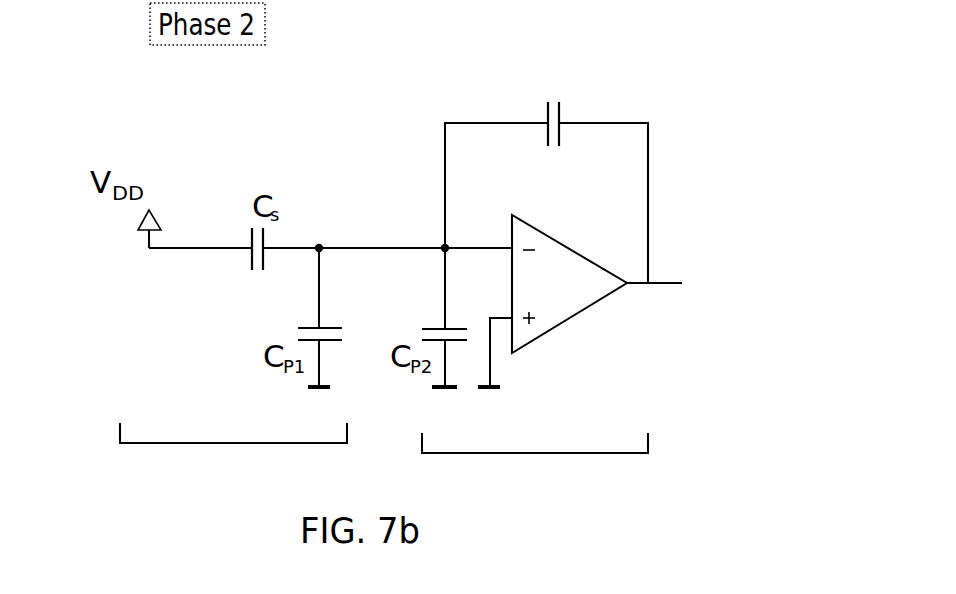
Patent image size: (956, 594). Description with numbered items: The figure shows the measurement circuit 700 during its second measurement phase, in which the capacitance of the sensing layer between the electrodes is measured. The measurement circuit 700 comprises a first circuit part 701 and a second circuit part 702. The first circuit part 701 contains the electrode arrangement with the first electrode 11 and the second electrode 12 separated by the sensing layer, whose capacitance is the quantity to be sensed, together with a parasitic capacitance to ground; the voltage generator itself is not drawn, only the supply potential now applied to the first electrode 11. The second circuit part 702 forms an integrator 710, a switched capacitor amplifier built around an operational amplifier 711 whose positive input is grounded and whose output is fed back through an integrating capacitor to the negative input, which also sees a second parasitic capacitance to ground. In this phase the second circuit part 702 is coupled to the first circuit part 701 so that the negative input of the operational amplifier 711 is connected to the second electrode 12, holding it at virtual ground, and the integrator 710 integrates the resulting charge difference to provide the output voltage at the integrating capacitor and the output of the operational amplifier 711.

The first electrode 11 is at (250, 241).
The second electrode 12 is at (262, 272).
The measurement circuit 700 is at (783, 507).
The first circuit part 701 is at (233, 443).
The second circuit part 702 is at (535, 453).
The integrator 710 is at (589, 185).
The operational amplifier 711 is at (562, 313).